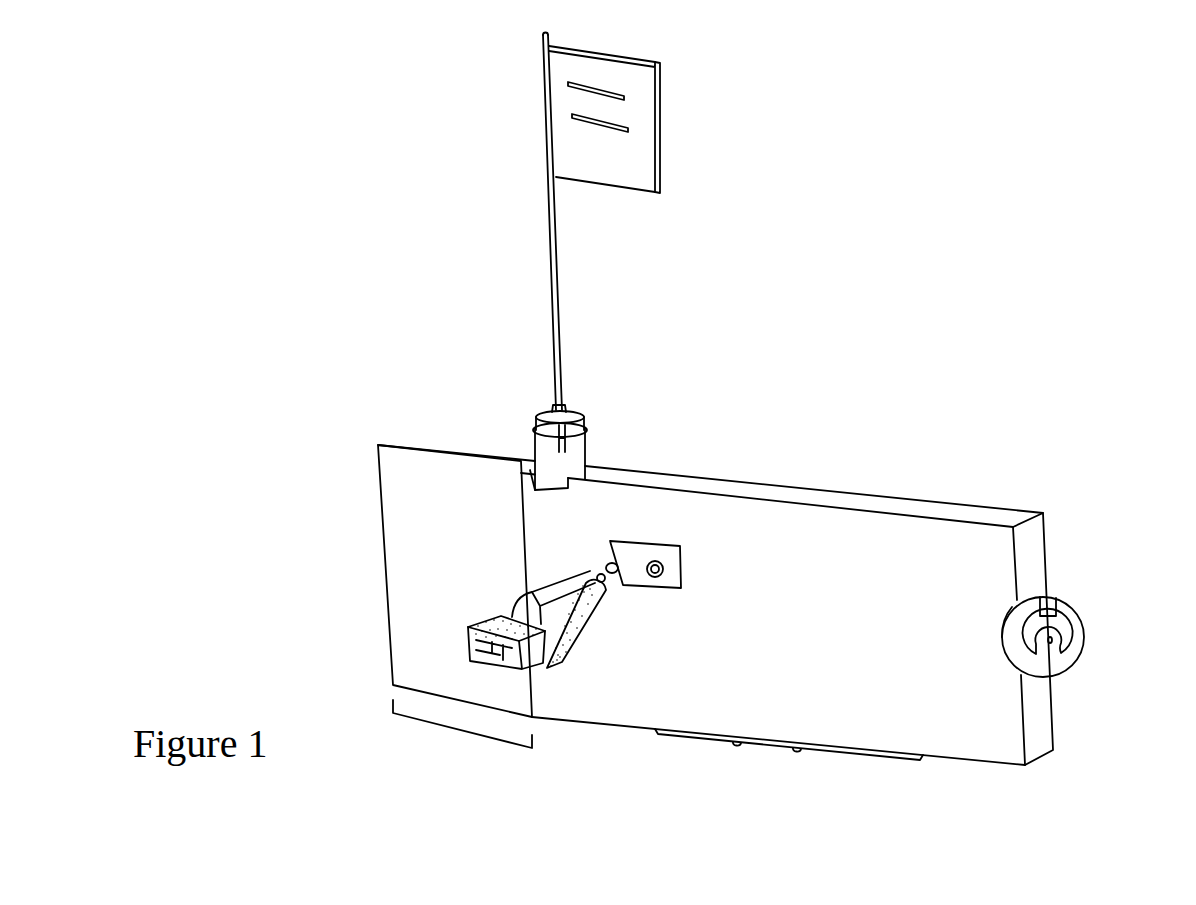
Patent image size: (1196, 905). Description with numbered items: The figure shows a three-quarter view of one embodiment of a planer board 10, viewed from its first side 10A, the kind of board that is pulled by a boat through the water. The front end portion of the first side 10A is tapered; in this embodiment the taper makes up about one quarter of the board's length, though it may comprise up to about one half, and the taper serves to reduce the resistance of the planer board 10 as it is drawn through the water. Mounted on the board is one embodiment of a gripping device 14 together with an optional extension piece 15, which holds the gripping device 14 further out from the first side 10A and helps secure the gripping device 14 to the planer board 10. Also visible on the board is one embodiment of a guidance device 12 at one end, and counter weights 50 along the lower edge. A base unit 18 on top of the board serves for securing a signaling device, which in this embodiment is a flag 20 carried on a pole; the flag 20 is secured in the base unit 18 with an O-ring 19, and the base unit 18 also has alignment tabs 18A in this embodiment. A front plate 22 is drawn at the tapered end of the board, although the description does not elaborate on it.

The planer board 10 is at (878, 503).
The first side 10A is at (463, 732).
The guidance device 12 is at (1065, 610).
The gripping device 14 is at (565, 580).
The extension piece 15 is at (642, 548).
The base unit 18 is at (587, 451).
The alignment tabs 18A is at (530, 470).
The O-ring 19 is at (585, 432).
The flag 20 is at (663, 148).
The front plate 22 is at (430, 485).
The counter weights 50 is at (835, 752).